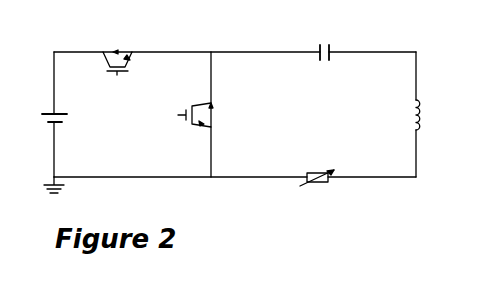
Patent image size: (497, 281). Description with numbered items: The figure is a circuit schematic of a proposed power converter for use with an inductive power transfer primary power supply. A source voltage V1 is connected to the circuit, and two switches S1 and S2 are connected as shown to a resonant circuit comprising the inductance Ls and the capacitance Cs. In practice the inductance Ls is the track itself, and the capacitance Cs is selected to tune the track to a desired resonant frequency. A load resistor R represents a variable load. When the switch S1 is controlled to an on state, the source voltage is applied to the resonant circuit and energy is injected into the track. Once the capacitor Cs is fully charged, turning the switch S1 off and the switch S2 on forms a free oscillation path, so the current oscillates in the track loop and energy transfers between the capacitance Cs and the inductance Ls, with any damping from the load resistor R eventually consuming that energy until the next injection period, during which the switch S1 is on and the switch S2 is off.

The switch S1 is at (118, 44).
The switch S2 is at (215, 118).
The voltage source V1 is at (70, 119).
The capacitance Cs is at (329, 41).
The inductance Ls is at (399, 116).
The load resistor R is at (317, 193).